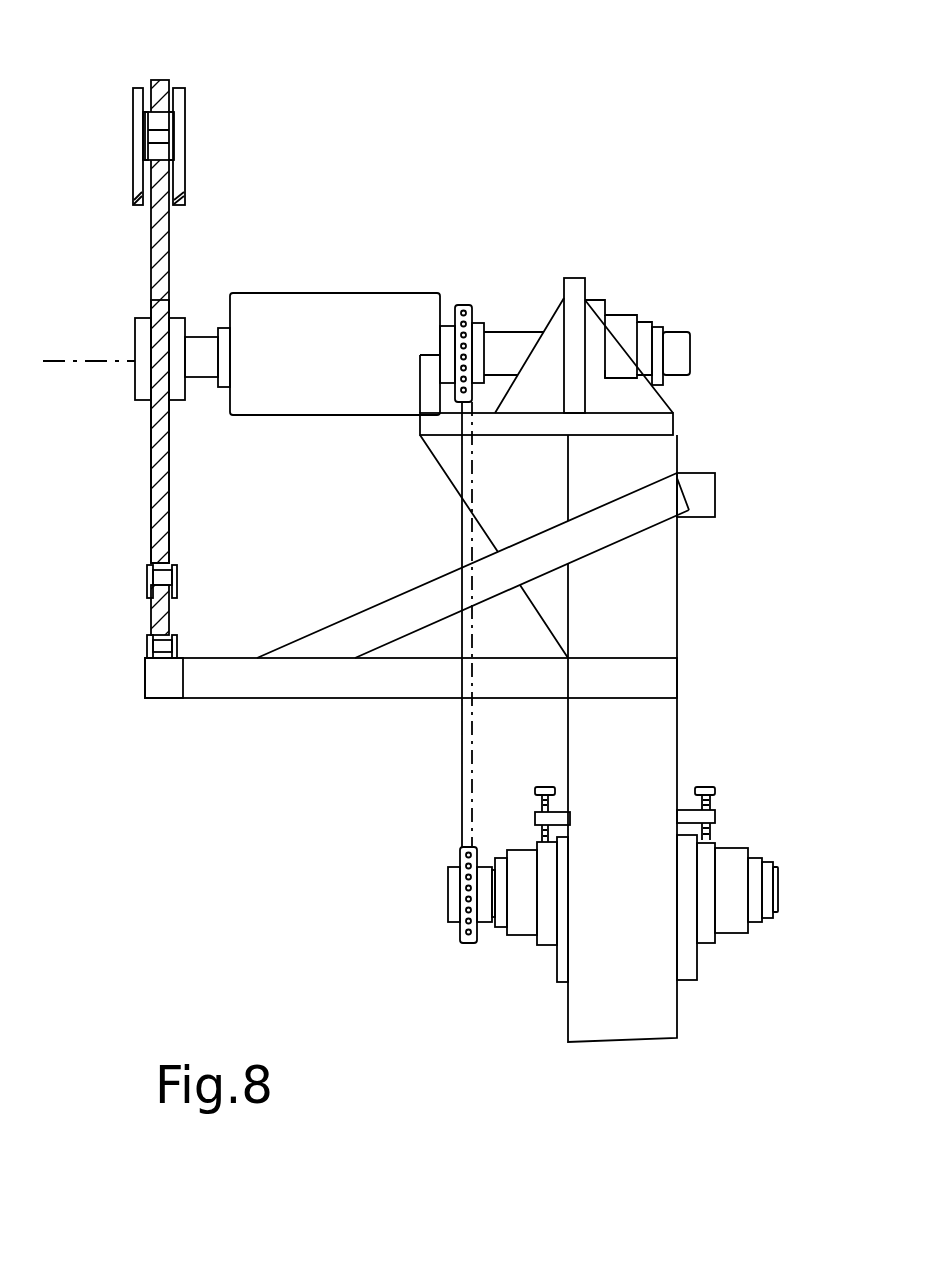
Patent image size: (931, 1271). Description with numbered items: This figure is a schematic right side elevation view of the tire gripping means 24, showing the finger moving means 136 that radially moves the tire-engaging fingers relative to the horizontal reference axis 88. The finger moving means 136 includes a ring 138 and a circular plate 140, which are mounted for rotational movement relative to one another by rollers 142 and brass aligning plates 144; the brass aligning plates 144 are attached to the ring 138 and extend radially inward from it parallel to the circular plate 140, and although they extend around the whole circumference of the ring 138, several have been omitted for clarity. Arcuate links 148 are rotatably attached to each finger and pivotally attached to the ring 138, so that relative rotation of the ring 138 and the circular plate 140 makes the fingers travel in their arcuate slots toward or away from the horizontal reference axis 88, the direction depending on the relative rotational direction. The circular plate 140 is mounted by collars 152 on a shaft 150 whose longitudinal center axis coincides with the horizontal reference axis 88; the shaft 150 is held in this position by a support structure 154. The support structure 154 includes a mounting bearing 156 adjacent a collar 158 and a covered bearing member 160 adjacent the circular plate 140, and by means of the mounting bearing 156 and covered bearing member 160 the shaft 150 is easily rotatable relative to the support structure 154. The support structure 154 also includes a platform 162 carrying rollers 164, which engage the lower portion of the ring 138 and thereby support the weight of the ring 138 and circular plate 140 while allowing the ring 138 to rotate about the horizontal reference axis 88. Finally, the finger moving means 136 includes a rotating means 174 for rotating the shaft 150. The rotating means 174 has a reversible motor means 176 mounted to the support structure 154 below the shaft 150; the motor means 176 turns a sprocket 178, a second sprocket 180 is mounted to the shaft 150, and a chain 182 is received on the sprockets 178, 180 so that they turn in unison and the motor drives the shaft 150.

The tire gripping means 24 is at (557, 138).
The horizontal reference axis 88 is at (63, 360).
The finger moving means 136 is at (259, 236).
The ring 138 is at (157, 80).
The circular plate 140 is at (170, 506).
The rollers 142 is at (172, 562).
The brass aligning plates 144 is at (143, 140).
The arcuate links 148 is at (133, 112).
The shaft 150 is at (203, 337).
The collars 152 is at (136, 400).
The support structure 154 is at (684, 452).
The mounting bearing 156 is at (626, 315).
The collar 158 is at (660, 325).
The covered bearing member 160 is at (361, 293).
The platform 162 is at (145, 698).
The rollers 164 is at (172, 633).
The rotating means 174 is at (406, 792).
The reversible motor means 176 is at (743, 848).
The sprocket 178 is at (460, 943).
The sprocket 180 is at (466, 305).
The chain 182 is at (703, 785).